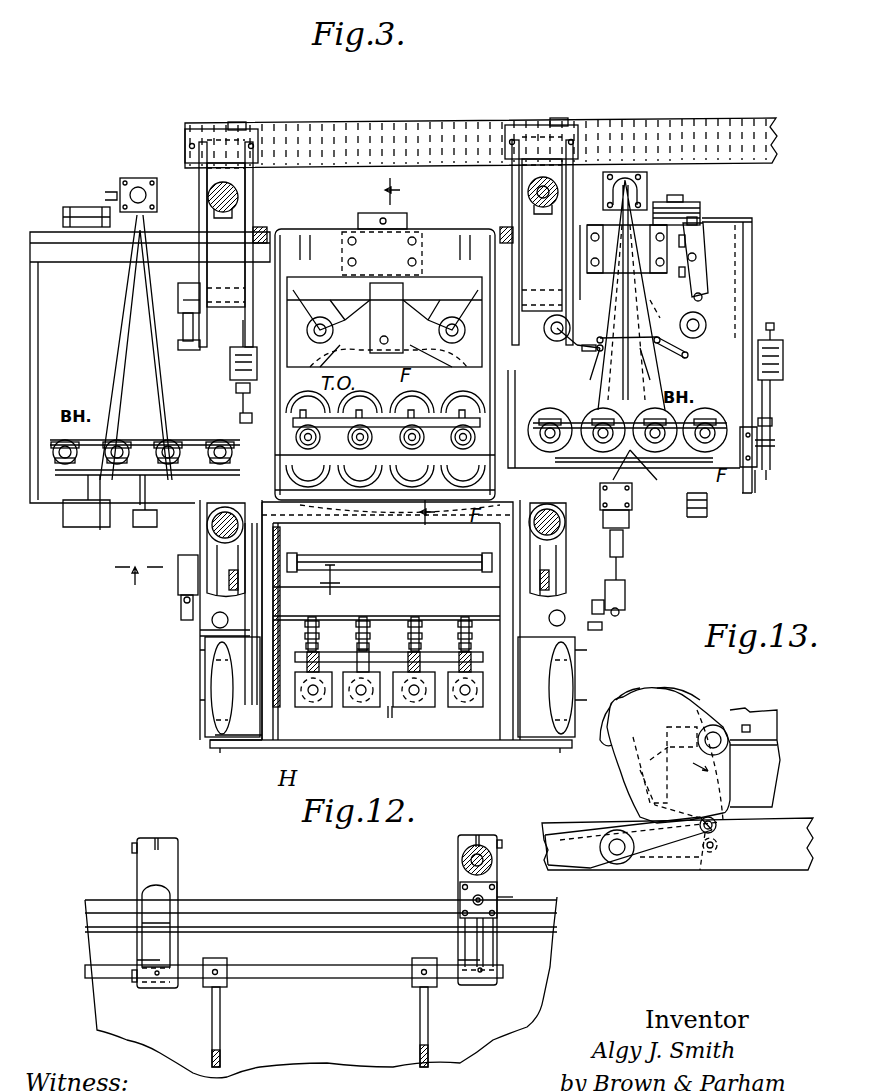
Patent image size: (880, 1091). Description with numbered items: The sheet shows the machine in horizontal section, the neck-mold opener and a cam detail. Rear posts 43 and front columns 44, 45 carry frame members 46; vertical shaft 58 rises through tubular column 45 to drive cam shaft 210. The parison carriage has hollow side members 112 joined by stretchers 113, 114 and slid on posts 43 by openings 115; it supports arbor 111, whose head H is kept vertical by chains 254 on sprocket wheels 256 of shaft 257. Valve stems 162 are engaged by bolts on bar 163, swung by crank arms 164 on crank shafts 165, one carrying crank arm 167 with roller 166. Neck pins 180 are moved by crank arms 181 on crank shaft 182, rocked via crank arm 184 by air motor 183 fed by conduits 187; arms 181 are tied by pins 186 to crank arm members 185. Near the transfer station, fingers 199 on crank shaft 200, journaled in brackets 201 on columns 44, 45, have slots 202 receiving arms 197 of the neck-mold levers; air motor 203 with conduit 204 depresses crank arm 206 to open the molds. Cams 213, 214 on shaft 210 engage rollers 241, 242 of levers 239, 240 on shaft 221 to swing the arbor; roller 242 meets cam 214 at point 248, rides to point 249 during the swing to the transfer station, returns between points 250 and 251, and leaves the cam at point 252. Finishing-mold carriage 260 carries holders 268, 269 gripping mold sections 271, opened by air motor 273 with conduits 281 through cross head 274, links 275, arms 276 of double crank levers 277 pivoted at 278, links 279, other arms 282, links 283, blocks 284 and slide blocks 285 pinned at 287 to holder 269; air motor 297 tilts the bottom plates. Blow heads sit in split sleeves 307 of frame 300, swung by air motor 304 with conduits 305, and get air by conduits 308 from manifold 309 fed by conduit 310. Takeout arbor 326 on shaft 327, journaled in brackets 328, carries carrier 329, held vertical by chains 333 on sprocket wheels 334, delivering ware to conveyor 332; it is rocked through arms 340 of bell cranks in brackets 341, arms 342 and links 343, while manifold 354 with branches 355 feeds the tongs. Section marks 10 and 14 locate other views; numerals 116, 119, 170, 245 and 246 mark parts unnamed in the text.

In FIG. 3, the section line 10 is at (417, 349).
In FIG. 3, the section line 14 is at (225, 587).
In FIG. 3, the posts 43 is at (212, 530).
In FIG. 3, the post or column 44 is at (222, 182).
In FIG. 12, the post or column 44 is at (172, 867).
In FIG. 3, the tubular column 45 is at (543, 177).
In FIG. 12, the tubular column 45 is at (462, 862).
In FIG. 13, the horizontal frame members 46 is at (742, 873).
In FIG. 3, the vertical shaft 58 is at (528, 193).
In FIG. 12, the vertical shaft 58 is at (465, 852).
In FIG. 3, the arbor 111 is at (280, 610).
In FIG. 3, the hollow side members 112 is at (205, 690).
In FIG. 3, the transverse stretcher 113 is at (358, 540).
In FIG. 3, the transverse stretcher 114 is at (262, 748).
In FIG. 3, the openings 115 is at (228, 510).
In FIG. 3, the base flange 116 is at (212, 745).
In FIG. 3, the wheel 119 is at (568, 680).
In FIG. 3, the valve stems 162 is at (420, 630).
In FIG. 3, the transverse bar 163 is at (395, 610).
In FIG. 3, the crank arms 164 is at (212, 622).
In FIG. 3, the crank shafts 165 is at (200, 636).
In FIG. 3, the roller 166 is at (604, 607).
In FIG. 3, the crank arm 167 is at (602, 626).
In FIG. 3, the bracket 170 is at (625, 595).
In FIG. 3, the plunger upper ends 180 is at (410, 700).
In FIG. 3, the crank arms 181 is at (465, 710).
In FIG. 3, the crank shaft 182 is at (440, 650).
In FIG. 3, the air motor 183 is at (375, 700).
In FIG. 3, the crank arm 184 is at (370, 660).
In FIG. 3, the crank arm members 185 is at (330, 660).
In FIG. 3, the pins 186 is at (320, 700).
In FIG. 3, the conduits 187 is at (392, 718).
In FIG. 3, the arm 197 is at (318, 625).
In FIG. 12, the crank arms or fingers 199 is at (220, 1004).
In FIG. 12, the crank shaft 200 is at (338, 968).
In FIG. 12, the brackets 201 is at (178, 965).
In FIG. 12, the slots 202 is at (220, 1058).
In FIG. 12, the air motor 203 is at (465, 897).
In FIG. 12, the conduit 204 is at (513, 899).
In FIG. 12, the crank arm 206 is at (483, 945).
In FIG. 13, the cam shaft 210 is at (718, 733).
In FIG. 13, the cam 213 is at (636, 687).
In FIG. 13, the cam 214 is at (660, 695).
In FIG. 13, the transverse shaft 221 is at (622, 860).
In FIG. 13, the lever 239 is at (552, 830).
In FIG. 13, the lever 240 is at (560, 868).
In FIG. 13, the roller 241 is at (705, 862).
In FIG. 13, the roller 242 is at (717, 848).
In FIG. 3, the bracket 245 is at (190, 592).
In FIG. 3, the bracket 246 is at (624, 555).
In FIG. 13, the cam point 248 is at (708, 815).
In FIG. 13, the cam point 249 is at (630, 800).
In FIG. 13, the cam point 250 is at (618, 770).
In FIG. 13, the cam point 251 is at (608, 720).
In FIG. 13, the cam point 252 is at (678, 765).
In FIG. 3, the chains 254 is at (295, 570).
In FIG. 3, the sprocket wheels 256 is at (287, 540).
In FIG. 3, the shaft 257 is at (405, 560).
In FIG. 3, the carriage 260 is at (770, 507).
In FIG. 3, the mold holder 268 is at (771, 404).
In FIG. 3, the mold holder 269 is at (775, 442).
In FIG. 3, the mold sections 271 is at (690, 408).
In FIG. 3, the air motor 273 is at (360, 222).
In FIG. 3, the cross head 274 is at (666, 304).
In FIG. 3, the links 275 is at (770, 325).
In FIG. 3, the arms 276 is at (585, 350).
In FIG. 3, the double crank levers 277 is at (550, 336).
In FIG. 3, the pivot 278 is at (706, 322).
In FIG. 3, the links 279 is at (590, 375).
In FIG. 3, the conduits 281 is at (407, 222).
In FIG. 3, the arms 282 is at (705, 298).
In FIG. 3, the links 283 is at (707, 262).
In FIG. 3, the blocks 284 is at (698, 240).
In FIG. 3, the slide blocks 285 is at (730, 238).
In FIG. 3, the pins 287 is at (772, 422).
In FIG. 3, the air motor 297 is at (783, 356).
In FIG. 3, the frame 300 is at (125, 343).
In FIG. 3, the air motor 304 is at (142, 178).
In FIG. 3, the conduits 305 is at (110, 195).
In FIG. 3, the split sleeves 307 is at (62, 470).
In FIG. 3, the air supply conduits 308 is at (70, 470).
In FIG. 3, the air supply manifold 309 is at (110, 520).
In FIG. 3, the conduit 310 is at (140, 515).
In FIG. 3, the arbor 326 is at (236, 390).
In FIG. 3, the shaft 327 is at (226, 300).
In FIG. 3, the brackets 328 is at (225, 240).
In FIG. 3, the carrier 329 is at (400, 511).
In FIG. 3, the conveyor 332 is at (417, 128).
In FIG. 3, the sprocket chains 333 is at (278, 360).
In FIG. 3, the sprocket wheels 334 is at (262, 232).
In FIG. 3, the arms 340 is at (256, 178).
In FIG. 3, the brackets 341 is at (235, 135).
In FIG. 3, the arms 342 is at (195, 268).
In FIG. 3, the links 343 is at (185, 318).
In FIG. 3, the manifold 354 is at (420, 410).
In FIG. 3, the branches 355 is at (360, 418).